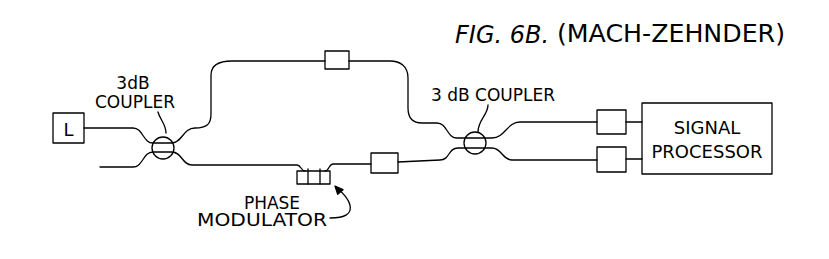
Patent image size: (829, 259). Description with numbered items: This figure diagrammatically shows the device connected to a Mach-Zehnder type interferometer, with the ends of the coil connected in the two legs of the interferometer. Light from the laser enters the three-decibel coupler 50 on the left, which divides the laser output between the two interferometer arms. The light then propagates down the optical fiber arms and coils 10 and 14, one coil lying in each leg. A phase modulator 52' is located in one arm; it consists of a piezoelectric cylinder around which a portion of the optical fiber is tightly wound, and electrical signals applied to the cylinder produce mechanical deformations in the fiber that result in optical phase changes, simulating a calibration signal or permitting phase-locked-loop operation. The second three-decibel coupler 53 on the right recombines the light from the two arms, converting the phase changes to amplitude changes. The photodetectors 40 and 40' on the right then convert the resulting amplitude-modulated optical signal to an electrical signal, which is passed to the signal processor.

The optical fiber coil 14 is at (339, 51).
The optical fiber coil 10 is at (387, 173).
The 3-db coupler 50 is at (168, 155).
The second 3 dB coupler 53 is at (478, 155).
The phase modulator 52' is at (315, 153).
The photodetector 40 is at (633, 106).
The photodetector 40' is at (621, 177).